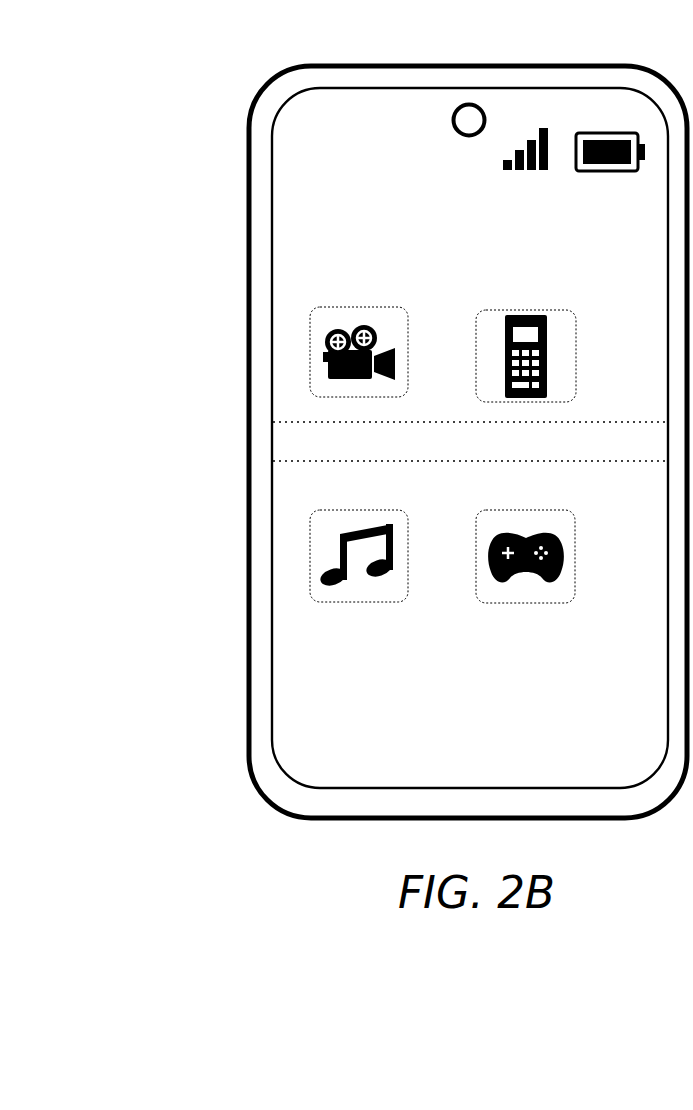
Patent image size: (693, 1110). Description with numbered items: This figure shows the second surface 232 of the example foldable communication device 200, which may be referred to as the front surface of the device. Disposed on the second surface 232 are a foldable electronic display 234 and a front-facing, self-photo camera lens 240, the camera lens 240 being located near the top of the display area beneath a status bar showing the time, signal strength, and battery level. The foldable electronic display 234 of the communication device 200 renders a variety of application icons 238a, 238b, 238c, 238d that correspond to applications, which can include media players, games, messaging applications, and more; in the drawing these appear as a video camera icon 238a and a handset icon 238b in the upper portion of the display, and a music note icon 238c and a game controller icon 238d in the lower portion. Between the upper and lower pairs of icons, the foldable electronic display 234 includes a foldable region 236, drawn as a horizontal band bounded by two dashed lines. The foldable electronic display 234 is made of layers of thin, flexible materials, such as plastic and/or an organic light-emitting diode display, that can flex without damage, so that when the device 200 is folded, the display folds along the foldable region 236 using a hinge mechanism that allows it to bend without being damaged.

The communication device 200 is at (247, 65).
The second surface 232 is at (246, 733).
The foldable electronic display 234 is at (283, 646).
The foldable region 236 is at (297, 434).
The application icon 238a is at (367, 320).
The application icon 238b is at (497, 320).
The application icon 238c is at (347, 588).
The application icon 238d is at (511, 590).
The front-facing camera lens 240 is at (452, 106).